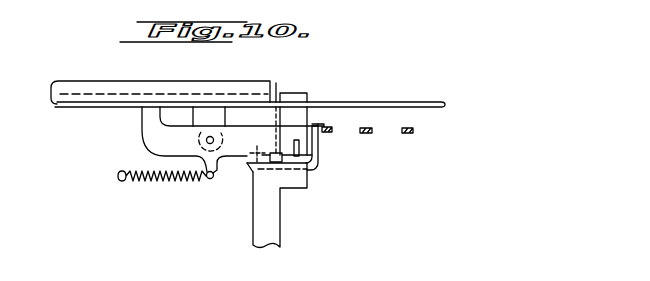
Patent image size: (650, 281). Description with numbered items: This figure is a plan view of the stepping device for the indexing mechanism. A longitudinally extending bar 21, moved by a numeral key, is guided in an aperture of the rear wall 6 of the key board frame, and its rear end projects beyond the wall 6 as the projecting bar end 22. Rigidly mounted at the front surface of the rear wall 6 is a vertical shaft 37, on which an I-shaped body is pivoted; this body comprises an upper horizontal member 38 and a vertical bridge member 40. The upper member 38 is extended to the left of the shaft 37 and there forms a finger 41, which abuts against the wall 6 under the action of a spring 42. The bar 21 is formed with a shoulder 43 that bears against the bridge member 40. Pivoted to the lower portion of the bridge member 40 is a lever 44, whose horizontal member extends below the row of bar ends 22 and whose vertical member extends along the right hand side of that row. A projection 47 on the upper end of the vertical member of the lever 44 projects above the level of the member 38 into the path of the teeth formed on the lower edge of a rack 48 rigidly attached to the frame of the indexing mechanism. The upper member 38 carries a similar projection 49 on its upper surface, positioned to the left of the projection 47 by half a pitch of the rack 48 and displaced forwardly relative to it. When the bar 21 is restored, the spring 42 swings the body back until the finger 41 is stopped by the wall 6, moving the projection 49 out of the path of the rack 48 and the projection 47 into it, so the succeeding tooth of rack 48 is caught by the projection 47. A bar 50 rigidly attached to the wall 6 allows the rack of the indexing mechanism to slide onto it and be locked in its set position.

The bar 50 is at (78, 88).
The rear wall 6 is at (378, 100).
The finger 41 is at (150, 110).
The vertical shaft 37 is at (205, 140).
The spring 42 is at (152, 180).
The upper horizontal member 38 is at (235, 155).
The vertical bridge member 40 is at (245, 160).
The bar 21 is at (273, 200).
The shoulder 43 is at (275, 83).
The projecting bar end 22 is at (300, 93).
The lever 44 is at (323, 163).
The projection 47 is at (318, 123).
The rack 48 is at (418, 143).
The projection 49 is at (300, 146).